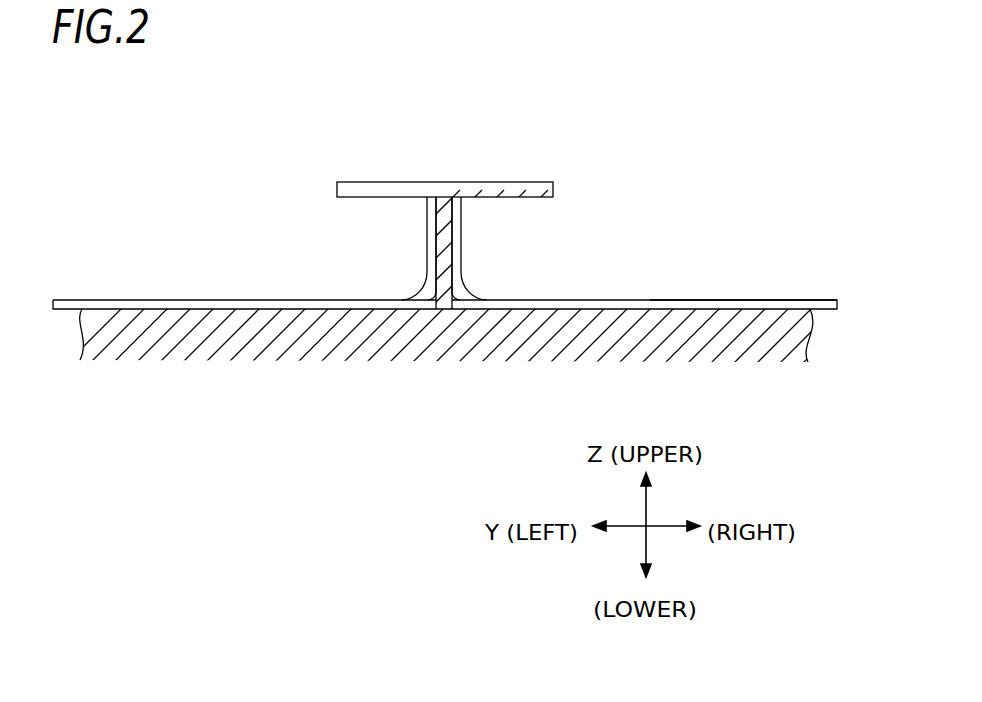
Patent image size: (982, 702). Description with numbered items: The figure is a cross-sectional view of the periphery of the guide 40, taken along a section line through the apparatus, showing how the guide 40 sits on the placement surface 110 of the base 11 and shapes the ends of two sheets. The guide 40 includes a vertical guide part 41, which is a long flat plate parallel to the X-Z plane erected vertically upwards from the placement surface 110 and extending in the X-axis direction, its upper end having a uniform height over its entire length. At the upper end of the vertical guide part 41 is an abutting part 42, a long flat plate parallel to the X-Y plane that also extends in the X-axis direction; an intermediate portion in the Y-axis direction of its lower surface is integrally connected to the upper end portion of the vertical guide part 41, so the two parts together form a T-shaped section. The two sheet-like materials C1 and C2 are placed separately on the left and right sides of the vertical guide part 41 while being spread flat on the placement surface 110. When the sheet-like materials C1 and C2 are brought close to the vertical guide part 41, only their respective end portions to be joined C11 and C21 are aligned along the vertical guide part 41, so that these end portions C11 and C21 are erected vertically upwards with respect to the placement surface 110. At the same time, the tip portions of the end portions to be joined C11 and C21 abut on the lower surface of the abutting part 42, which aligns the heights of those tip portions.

The base member 11 is at (790, 335).
The placement surface 110 is at (628, 307).
The guide 40 is at (563, 113).
The vertical guide part 41 is at (463, 228).
The abutting part 42 is at (430, 212).
The sheet-like material C1 is at (150, 300).
The sheet-like material C2 is at (753, 300).
The end portion to be joined C11 is at (427, 256).
The end portion to be joined C21 is at (463, 262).